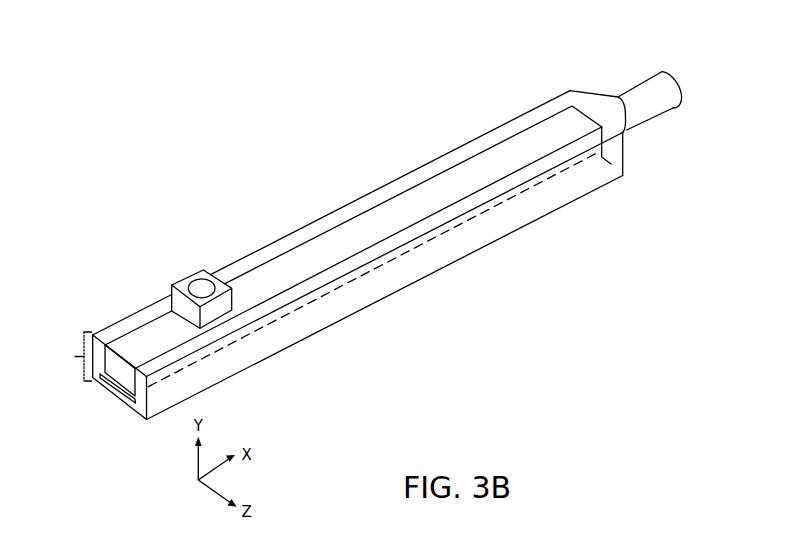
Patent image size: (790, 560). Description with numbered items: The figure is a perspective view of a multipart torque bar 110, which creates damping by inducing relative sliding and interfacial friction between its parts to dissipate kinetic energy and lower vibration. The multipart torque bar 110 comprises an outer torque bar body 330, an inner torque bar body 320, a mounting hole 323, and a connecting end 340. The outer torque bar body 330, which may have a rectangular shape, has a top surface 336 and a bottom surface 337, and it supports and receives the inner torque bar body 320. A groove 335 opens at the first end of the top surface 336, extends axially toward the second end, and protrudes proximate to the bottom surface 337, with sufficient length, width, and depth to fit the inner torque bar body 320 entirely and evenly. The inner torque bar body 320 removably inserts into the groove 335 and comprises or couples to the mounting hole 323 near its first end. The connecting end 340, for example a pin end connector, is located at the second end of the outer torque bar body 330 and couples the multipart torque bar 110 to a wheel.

The multipart torque bar 110 is at (361, 226).
The inner torque bar body 320 is at (137, 345).
The mounting hole 323 is at (203, 288).
The outer torque bar body 330 is at (66, 356).
The groove 335 is at (117, 391).
The top surface 336 is at (395, 186).
The bottom surface 337 is at (454, 270).
The connecting end 340 is at (650, 87).